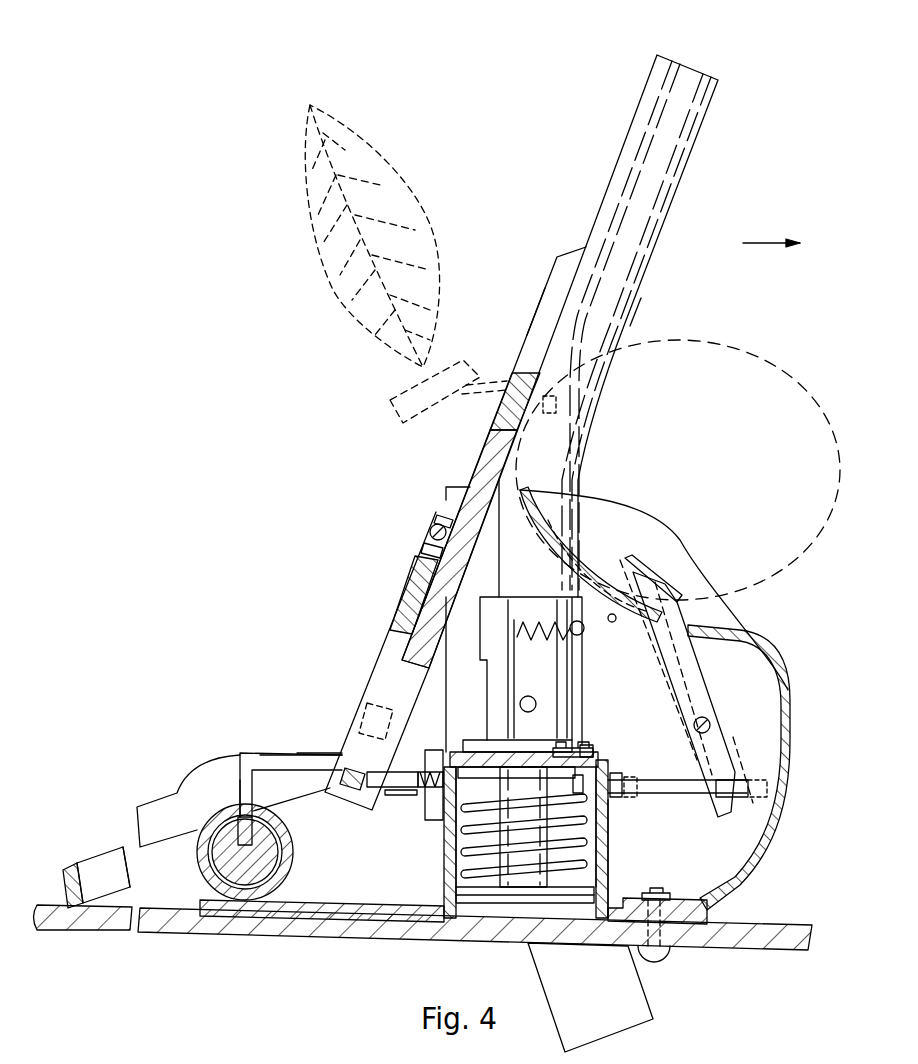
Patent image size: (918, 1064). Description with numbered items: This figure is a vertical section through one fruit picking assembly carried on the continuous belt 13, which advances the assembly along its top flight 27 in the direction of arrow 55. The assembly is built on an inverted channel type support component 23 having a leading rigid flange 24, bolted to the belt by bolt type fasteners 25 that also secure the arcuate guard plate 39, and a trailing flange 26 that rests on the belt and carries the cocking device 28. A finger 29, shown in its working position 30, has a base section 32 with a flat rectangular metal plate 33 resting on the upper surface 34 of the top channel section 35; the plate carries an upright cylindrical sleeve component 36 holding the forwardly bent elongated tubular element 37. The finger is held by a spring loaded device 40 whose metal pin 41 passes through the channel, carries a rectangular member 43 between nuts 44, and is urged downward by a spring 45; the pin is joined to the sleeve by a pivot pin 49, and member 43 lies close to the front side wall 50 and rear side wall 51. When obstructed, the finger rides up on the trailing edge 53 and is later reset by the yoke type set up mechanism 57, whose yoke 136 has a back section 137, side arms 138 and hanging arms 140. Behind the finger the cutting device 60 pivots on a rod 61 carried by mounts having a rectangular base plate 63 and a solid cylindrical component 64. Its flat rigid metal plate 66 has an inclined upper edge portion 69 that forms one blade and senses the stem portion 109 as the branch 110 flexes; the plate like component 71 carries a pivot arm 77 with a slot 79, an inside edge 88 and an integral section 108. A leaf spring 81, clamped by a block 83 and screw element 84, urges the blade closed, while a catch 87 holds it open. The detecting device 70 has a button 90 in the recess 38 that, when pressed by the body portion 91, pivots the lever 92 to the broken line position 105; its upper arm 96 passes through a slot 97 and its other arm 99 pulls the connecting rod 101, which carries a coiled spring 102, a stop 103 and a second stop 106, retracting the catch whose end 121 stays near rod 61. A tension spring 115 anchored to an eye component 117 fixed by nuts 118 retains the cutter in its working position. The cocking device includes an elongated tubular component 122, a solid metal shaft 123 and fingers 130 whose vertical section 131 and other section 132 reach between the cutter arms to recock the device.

The continuous belt 13 is at (178, 940).
The inverted channel type support component 23 is at (609, 860).
The rigid flange 24 is at (708, 915).
The bolt type fasteners 25 is at (662, 953).
The trailing flange 26 is at (333, 899).
The top flight 27 is at (253, 937).
The cocking device 28 is at (290, 868).
The fingers 29 is at (633, 118).
The working position 30 is at (639, 291).
The base section 32 is at (487, 725).
The flat rectangular metal plate 33 is at (512, 745).
The upper surface 34 is at (600, 752).
The top channel section 35 is at (618, 775).
The upright cylindrical sleeve component 36 is at (480, 633).
The elongated tubular element 37 is at (631, 318).
The recess 38 is at (637, 512).
The arcuate guard plate 39 is at (786, 706).
The spring loaded device 40 is at (470, 842).
The metal pin 41 is at (500, 828).
The rectangular member 43 is at (457, 895).
The nuts 44 is at (562, 888).
The spring 45 is at (562, 865).
The pivot pin 49 is at (540, 690).
The front side wall 50 is at (610, 878).
The rear side wall 51 is at (444, 853).
The trailing edge 53 is at (462, 741).
The arrow 55 is at (771, 233).
The yoke type set up mechanism 57 is at (183, 795).
The cutting device 60 is at (580, 252).
The rod 61 is at (328, 792).
The rectangular base plate 63 is at (445, 820).
The solid cylindrical component 64 is at (384, 793).
The flat rigid metal plate 66 is at (525, 380).
The upper edge portion 69 is at (527, 333).
The detecting device 70 is at (668, 794).
The plate like component 71 is at (408, 582).
The pivot arm 77 is at (373, 669).
The slot 79 is at (366, 723).
The leaf spring 81 is at (424, 551).
The block 83 is at (436, 521).
The screw element 84 is at (430, 530).
The catch 87 is at (425, 770).
The inside edge 88 is at (348, 792).
The button 90 is at (640, 566).
The body portion 91 is at (742, 356).
The lever 92 is at (716, 690).
The upper arm 96 is at (700, 660).
The slot 97 is at (636, 615).
The other arm 99 is at (738, 755).
The connecting rod 101 is at (640, 780).
The coiled spring 102 is at (433, 750).
The stop 103 is at (620, 798).
The broken line position 105 is at (626, 668).
The second stop 106 is at (552, 792).
The integral section 108 is at (388, 795).
The stem portion 109 is at (522, 427).
The branch 110 is at (440, 355).
The tension spring 115 is at (558, 621).
The eye component 117 is at (585, 634).
The nuts 118 is at (590, 752).
The end 121 is at (338, 749).
The elongated tubular component 122 is at (200, 835).
The solid metal shaft 123 is at (290, 852).
The fingers 130 is at (250, 752).
The vertical section 131 is at (240, 787).
The other section 132 is at (270, 770).
The yoke 136 is at (75, 878).
The back section 137 is at (72, 895).
The side arms 138 is at (128, 893).
The arms 140 is at (621, 1035).